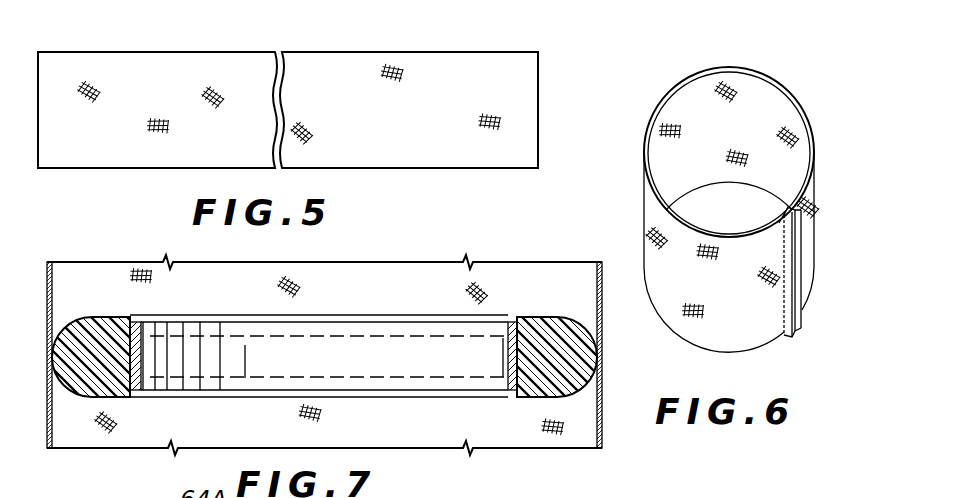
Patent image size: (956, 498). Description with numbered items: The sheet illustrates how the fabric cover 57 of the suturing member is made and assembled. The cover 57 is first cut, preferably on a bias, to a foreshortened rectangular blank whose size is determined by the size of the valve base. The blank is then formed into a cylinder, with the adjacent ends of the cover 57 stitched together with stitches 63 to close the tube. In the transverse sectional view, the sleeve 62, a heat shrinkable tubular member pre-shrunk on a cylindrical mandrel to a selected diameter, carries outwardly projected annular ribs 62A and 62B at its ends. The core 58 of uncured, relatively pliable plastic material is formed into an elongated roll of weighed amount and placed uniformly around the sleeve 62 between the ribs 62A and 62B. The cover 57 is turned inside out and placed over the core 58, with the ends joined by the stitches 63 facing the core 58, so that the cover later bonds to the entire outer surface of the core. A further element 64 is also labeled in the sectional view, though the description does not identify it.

In FIG. 5, the cover 57 is at (524, 83).
In FIG. 6, the cover 57 is at (799, 100).
In FIG. 7, the cover 57 is at (604, 278).
In FIG. 7, the core 58 is at (527, 397).
In FIG. 7, the sleeve 62 is at (512, 325).
In FIG. 7, the rib 62A is at (130, 322).
In FIG. 7, the rib 62B is at (130, 392).
In FIG. 6, the stitches 63 is at (785, 300).
In FIG. 7, the inner tube 64 is at (319, 406).